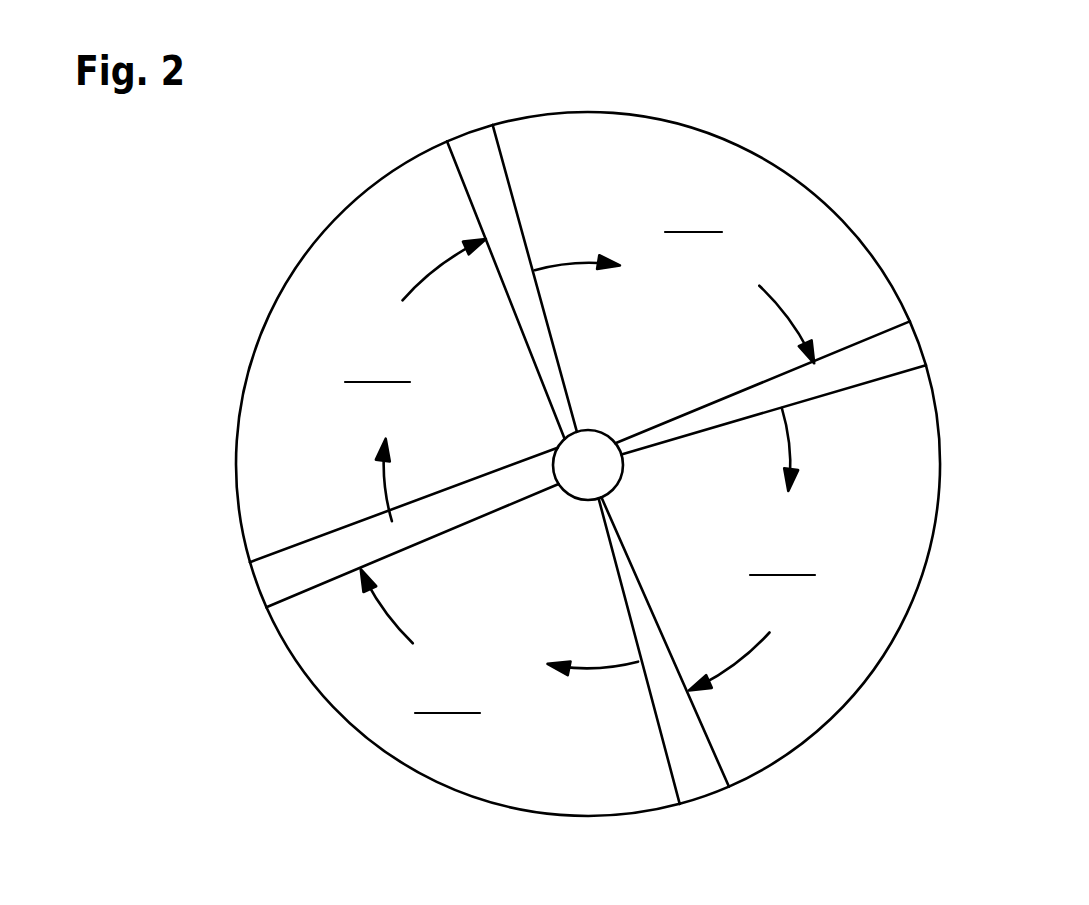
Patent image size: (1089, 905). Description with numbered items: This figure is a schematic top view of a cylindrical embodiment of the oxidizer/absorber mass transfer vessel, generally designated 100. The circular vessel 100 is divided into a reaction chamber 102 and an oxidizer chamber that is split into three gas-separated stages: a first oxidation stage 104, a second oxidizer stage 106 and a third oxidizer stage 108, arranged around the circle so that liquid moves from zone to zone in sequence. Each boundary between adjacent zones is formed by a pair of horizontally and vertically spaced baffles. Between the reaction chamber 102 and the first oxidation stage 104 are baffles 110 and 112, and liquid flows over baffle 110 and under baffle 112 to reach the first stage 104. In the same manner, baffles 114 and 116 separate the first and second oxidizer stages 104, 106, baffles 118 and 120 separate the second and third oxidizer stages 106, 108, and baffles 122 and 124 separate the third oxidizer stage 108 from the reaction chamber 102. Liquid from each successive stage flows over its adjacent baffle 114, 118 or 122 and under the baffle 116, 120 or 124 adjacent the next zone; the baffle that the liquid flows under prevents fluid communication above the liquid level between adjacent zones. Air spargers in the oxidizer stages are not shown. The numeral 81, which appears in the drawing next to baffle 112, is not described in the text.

The circular design for the reaction chamber and oxidation stages 100 is at (907, 238).
The reaction chamber 102 is at (283, 300).
The first oxidation stage 104 is at (758, 185).
The second oxidizer stage 106 is at (912, 495).
The third oxidizer stage 108 is at (443, 770).
The baffle 110 is at (446, 249).
The baffle 112 is at (467, 147).
The partition wall 81 is at (503, 147).
The baffle 114 is at (815, 360).
The baffle 116 is at (902, 372).
The baffle 118 is at (721, 670).
The baffle 120 is at (681, 782).
The baffle 122 is at (347, 562).
The baffle 124 is at (250, 560).